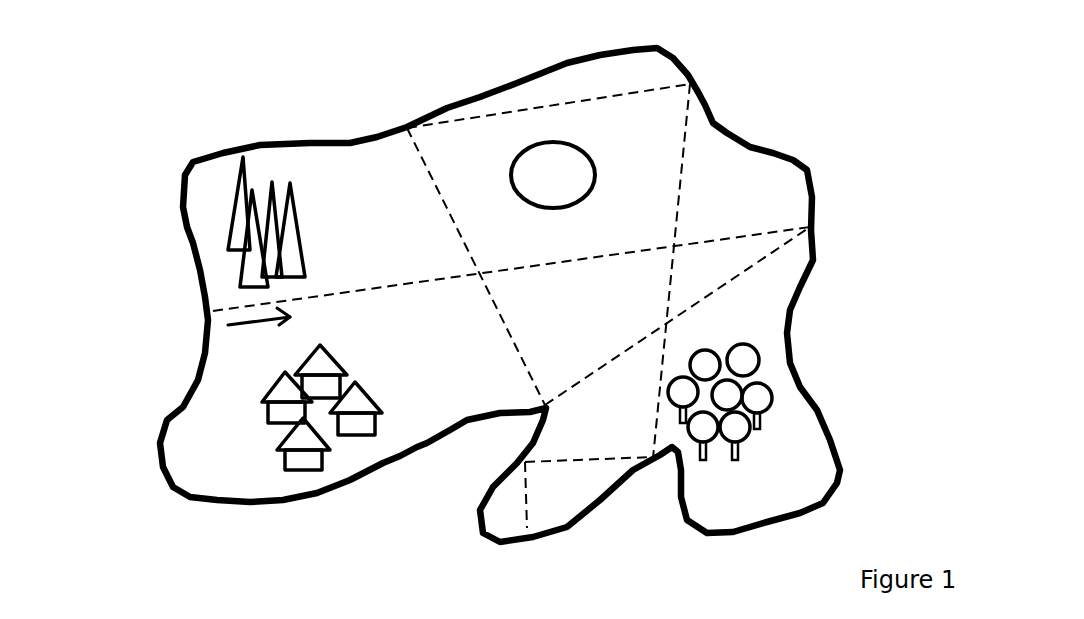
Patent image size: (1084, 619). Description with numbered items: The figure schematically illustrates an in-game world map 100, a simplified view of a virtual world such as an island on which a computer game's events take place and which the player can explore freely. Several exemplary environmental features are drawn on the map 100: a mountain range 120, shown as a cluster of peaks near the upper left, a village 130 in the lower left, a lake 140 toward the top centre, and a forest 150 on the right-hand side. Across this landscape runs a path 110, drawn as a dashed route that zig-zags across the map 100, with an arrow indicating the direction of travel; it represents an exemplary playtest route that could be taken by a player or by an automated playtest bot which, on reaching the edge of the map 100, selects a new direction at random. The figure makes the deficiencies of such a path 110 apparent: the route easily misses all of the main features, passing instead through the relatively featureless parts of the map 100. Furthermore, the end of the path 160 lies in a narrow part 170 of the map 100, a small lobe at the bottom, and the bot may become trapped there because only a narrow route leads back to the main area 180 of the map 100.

The map 100 is at (908, 44).
The path 110 is at (285, 298).
The mountain range 120 is at (237, 203).
The village 130 is at (270, 447).
The lake 140 is at (518, 148).
The forest 150 is at (775, 395).
The end of the path 160 is at (483, 540).
The narrow part 170 is at (548, 485).
The main area 180 is at (727, 183).